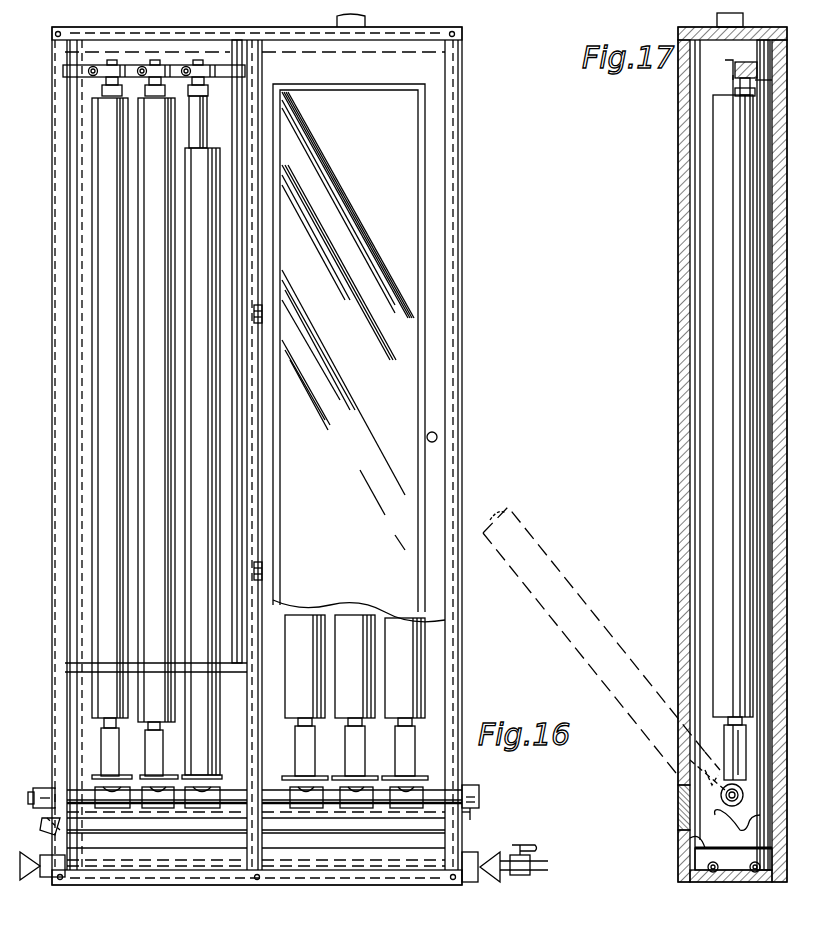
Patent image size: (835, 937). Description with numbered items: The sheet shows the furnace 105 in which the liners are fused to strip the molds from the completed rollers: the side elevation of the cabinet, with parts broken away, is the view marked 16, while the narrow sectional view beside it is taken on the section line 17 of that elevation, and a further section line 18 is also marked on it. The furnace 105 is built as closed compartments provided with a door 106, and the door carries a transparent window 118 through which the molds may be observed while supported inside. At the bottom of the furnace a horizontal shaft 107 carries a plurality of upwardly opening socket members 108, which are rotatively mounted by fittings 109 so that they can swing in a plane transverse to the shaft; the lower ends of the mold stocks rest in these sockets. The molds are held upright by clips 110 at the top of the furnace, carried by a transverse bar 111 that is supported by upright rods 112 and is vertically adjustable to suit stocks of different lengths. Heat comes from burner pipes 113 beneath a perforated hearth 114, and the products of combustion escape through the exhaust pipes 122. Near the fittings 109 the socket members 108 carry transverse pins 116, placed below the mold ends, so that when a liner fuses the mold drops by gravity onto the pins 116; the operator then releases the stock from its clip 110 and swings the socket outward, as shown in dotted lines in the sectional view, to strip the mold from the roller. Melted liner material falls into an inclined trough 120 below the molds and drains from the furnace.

In FIG. 16, the furnace 105 is at (312, 26).
In FIG. 17, the furnace 105 is at (732, 454).
In FIG. 16, the door 106 is at (412, 237).
In FIG. 17, the door 106 is at (678, 348).
In FIG. 16, the horizontal shaft 107 is at (462, 784).
In FIG. 17, the horizontal shaft 107 is at (742, 790).
In FIG. 16, the socket member 108 is at (108, 742).
In FIG. 17, the socket member 108 is at (690, 762).
In FIG. 16, the fitting 109 is at (400, 795).
In FIG. 17, the fitting 109 is at (735, 790).
In FIG. 16, the clip 110 is at (157, 67).
In FIG. 16, the transverse bar 111 is at (246, 72).
In FIG. 17, the transverse bar 111 is at (735, 66).
In FIG. 16, the upright rod 112 is at (230, 103).
In FIG. 17, the upright rod 112 is at (765, 228).
In FIG. 16, the burner pipe 113 is at (558, 907).
In FIG. 17, the burner pipe 113 is at (752, 872).
In FIG. 16, the perforated hearth 114 is at (594, 642).
In FIG. 17, the perforated hearth 114 is at (698, 838).
In FIG. 16, the transverse pin 116 is at (96, 776).
In FIG. 17, the transverse pin 116 is at (753, 748).
In FIG. 16, the transparent window 118 is at (412, 116).
In FIG. 17, the transparent window 118 is at (678, 153).
In FIG. 16, the inclined trough 120 is at (372, 830).
In FIG. 17, the inclined trough 120 is at (747, 830).
In FIG. 16, the exhaust pipe 122 is at (430, 26).
In FIG. 17, the exhaust pipe 122 is at (800, 26).
In FIG. 16, the Fig. 16 is at (445, 52).
In FIG. 16, the section line 17— 17 is at (112, 66).
In FIG. 16, the section line 18— 18 is at (65, 52).